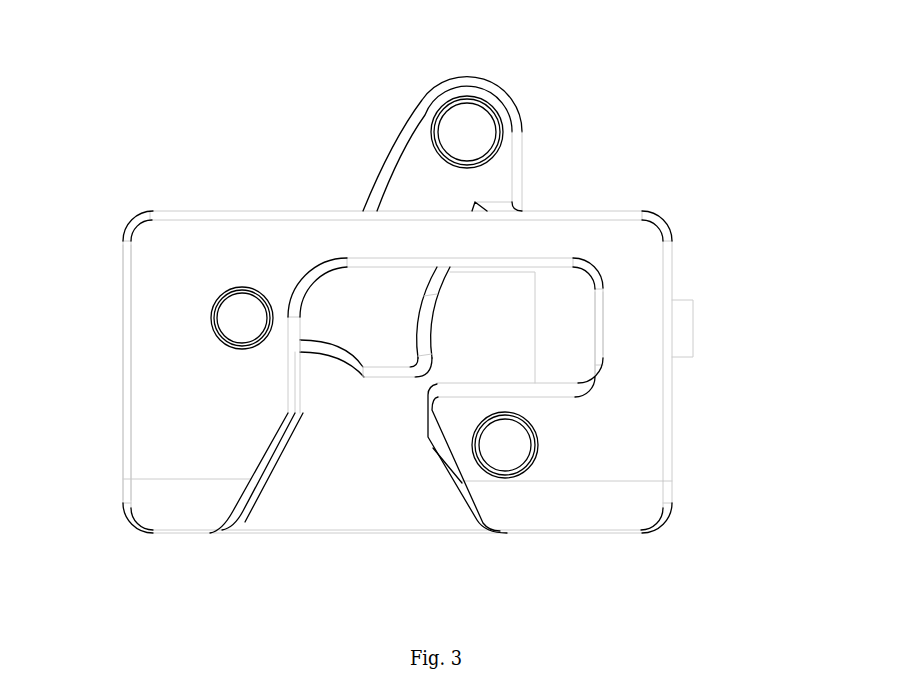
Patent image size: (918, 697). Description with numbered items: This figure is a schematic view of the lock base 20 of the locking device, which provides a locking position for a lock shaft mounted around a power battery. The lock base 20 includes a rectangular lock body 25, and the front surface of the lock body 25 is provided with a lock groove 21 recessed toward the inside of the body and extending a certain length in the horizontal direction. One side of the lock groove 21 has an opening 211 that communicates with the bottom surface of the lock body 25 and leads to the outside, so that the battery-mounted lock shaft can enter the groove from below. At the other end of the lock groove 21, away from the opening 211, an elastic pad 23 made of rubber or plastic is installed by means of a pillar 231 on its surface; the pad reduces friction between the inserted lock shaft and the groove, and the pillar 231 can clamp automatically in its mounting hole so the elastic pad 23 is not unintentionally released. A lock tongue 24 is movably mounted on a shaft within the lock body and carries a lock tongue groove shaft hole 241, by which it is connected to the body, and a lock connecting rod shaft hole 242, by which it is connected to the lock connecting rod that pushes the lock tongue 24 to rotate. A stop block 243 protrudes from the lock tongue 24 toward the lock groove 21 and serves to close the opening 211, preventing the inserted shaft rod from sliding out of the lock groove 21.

The lock base 20 is at (437, 321).
The lock groove 21 is at (495, 297).
The opening 211 is at (385, 490).
The elastic pad 23 is at (580, 317).
The pillar 231 is at (693, 327).
The lock tongue 24 is at (405, 112).
The lock tongue groove shaft hole 241 is at (235, 288).
The lock connecting rod shaft hole 242 is at (460, 123).
The stop block 243 is at (388, 368).
The lock body 25 is at (127, 365).